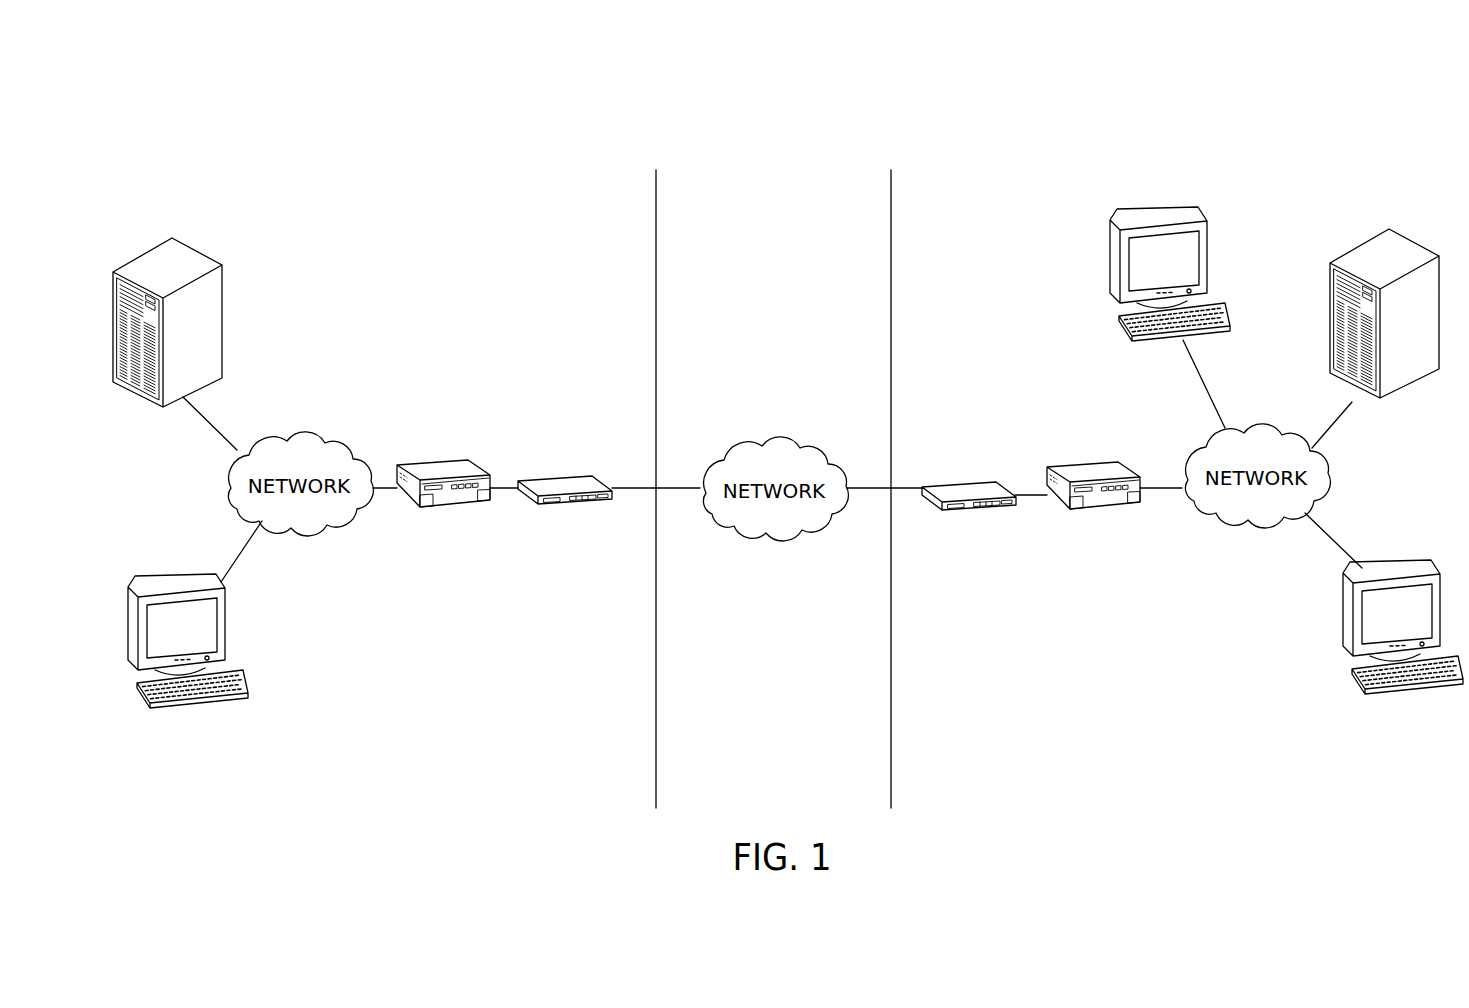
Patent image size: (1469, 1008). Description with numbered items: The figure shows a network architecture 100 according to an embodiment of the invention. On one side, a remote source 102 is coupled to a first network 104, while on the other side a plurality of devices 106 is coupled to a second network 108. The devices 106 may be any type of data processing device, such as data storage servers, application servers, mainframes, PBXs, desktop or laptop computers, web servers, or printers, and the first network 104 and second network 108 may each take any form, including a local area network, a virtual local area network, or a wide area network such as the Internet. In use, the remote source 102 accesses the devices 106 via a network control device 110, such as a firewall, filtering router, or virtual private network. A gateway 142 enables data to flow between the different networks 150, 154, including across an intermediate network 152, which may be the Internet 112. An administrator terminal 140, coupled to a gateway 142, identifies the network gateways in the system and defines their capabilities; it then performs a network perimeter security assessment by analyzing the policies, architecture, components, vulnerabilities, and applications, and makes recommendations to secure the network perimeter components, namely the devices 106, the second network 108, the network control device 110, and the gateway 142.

The network architecture 100 is at (365, 195).
The remote source 102 is at (222, 315).
The network 104 is at (294, 433).
The device 106 is at (1330, 290).
The network 108 is at (1218, 523).
The network control device 110 is at (438, 463).
The Internet 112 is at (760, 438).
The administrator terminal 140 is at (1114, 268).
The gateway 142 is at (569, 505).
The network 150 is at (503, 718).
The intermediate network 152 is at (800, 718).
The network 154 is at (1055, 718).